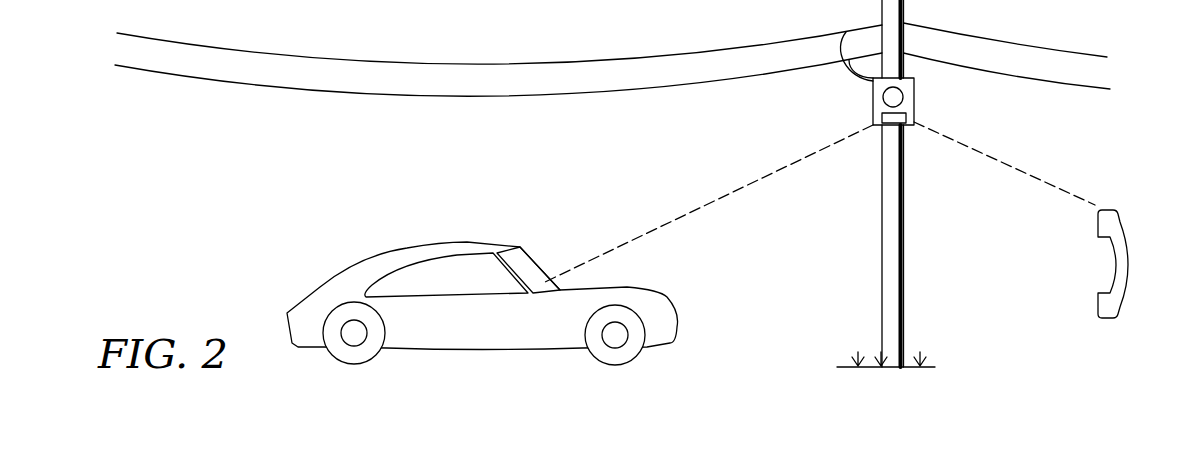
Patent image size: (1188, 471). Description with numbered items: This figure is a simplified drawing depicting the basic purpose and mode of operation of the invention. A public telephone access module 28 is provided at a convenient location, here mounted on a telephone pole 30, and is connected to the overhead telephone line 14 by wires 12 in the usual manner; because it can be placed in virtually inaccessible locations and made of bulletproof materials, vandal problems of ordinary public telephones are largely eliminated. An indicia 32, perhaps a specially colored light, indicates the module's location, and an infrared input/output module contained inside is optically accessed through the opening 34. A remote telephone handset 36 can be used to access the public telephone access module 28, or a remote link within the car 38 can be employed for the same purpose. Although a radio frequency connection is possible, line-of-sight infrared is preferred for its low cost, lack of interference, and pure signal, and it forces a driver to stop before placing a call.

The wires 12 is at (855, 79).
The telephone line 14 is at (500, 63).
The public telephone access module (PTAM) 28 is at (914, 100).
The telephone pole 30 is at (903, 273).
The indicia 32 is at (885, 102).
The opening 34 is at (897, 116).
The remote telephone handset 36 is at (1110, 255).
The car 38 is at (395, 250).